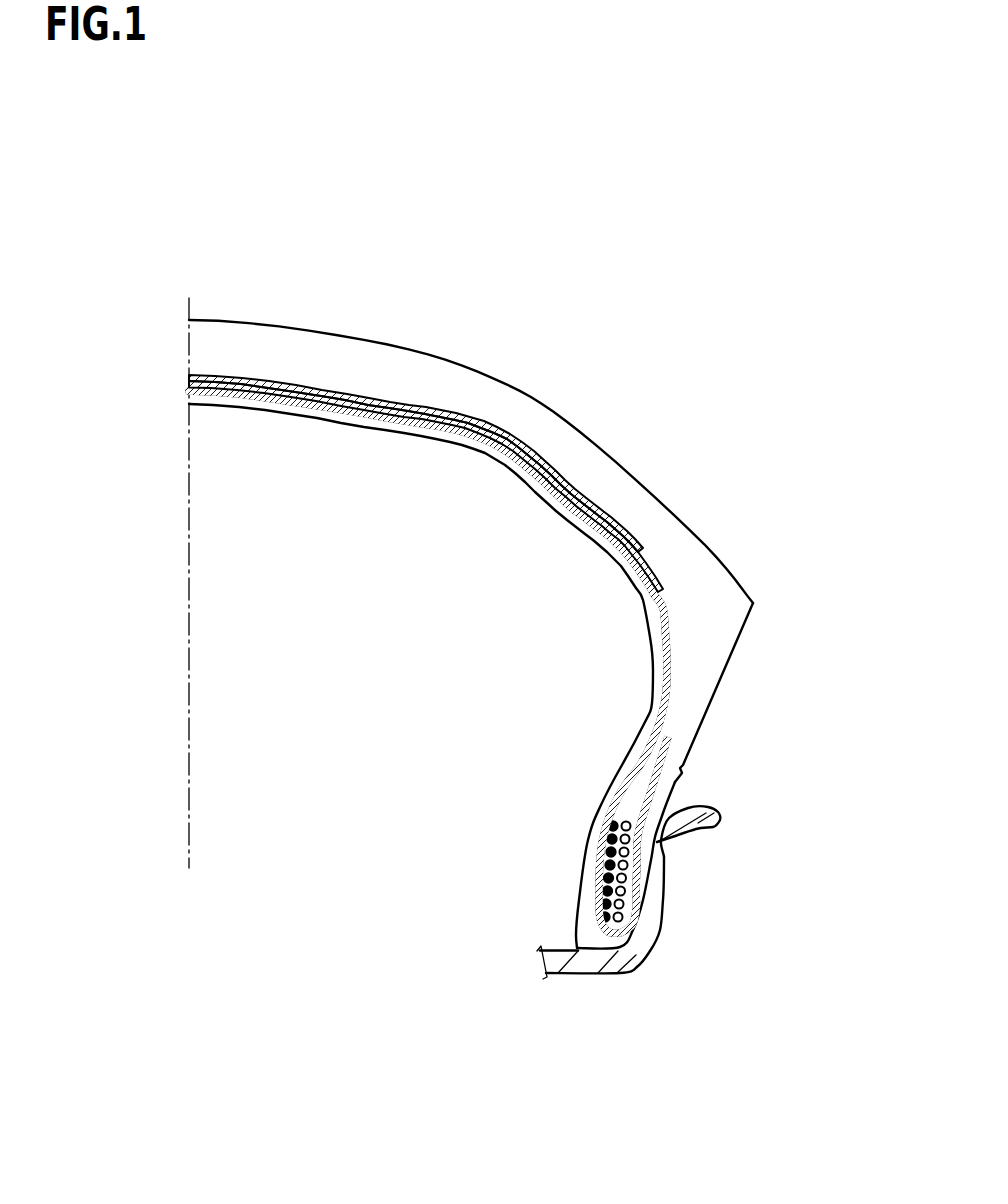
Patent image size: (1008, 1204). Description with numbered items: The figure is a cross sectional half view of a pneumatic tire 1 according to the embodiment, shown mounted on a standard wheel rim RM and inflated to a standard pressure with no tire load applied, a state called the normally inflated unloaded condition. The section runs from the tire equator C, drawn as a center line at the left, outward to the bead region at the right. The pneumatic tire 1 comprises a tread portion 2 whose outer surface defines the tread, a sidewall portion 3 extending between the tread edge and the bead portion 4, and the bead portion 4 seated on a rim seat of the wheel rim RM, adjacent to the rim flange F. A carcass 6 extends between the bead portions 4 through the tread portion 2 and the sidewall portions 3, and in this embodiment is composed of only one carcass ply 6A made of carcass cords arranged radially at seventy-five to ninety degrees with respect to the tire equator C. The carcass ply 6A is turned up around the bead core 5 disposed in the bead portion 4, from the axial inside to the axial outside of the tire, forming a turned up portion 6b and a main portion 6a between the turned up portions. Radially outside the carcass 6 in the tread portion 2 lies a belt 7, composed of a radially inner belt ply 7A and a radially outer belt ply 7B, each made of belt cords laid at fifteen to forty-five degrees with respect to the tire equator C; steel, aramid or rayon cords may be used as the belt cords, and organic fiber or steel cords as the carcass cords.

The pneumatic tire 1 is at (533, 577).
The tread portion 2 is at (503, 362).
The sidewall portion 3 is at (759, 682).
The bead portion 4 is at (657, 903).
The bead core 5 is at (622, 916).
The carcass 6 is at (533, 662).
The carcass ply 6A is at (502, 662).
The main portion 6a is at (660, 690).
The turned up portion 6b is at (668, 752).
The belt 7 is at (426, 392).
The inner belt ply 7A is at (333, 392).
The outer belt ply 7B is at (443, 423).
The tire equator C is at (188, 565).
The rim flange F is at (705, 812).
The wheel rim RM is at (671, 935).